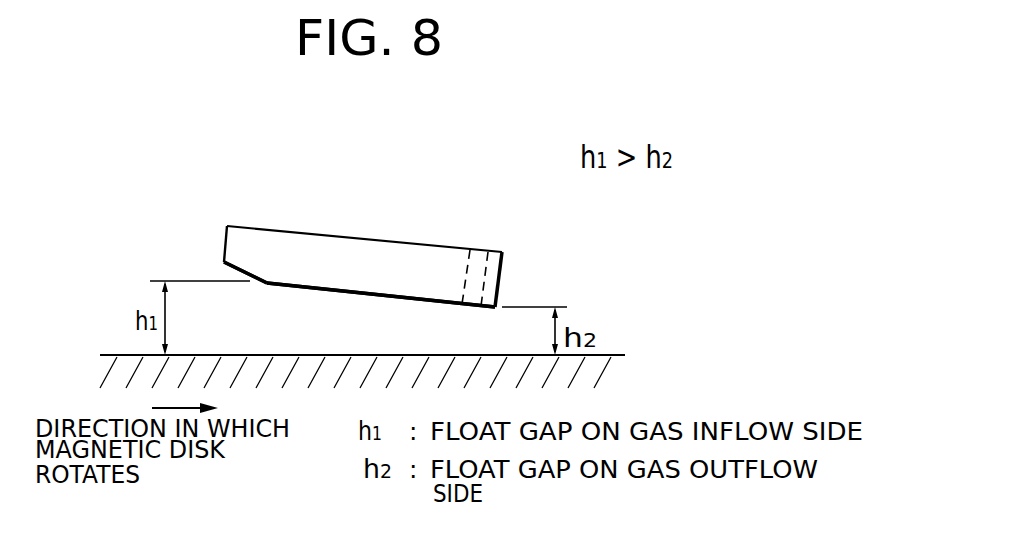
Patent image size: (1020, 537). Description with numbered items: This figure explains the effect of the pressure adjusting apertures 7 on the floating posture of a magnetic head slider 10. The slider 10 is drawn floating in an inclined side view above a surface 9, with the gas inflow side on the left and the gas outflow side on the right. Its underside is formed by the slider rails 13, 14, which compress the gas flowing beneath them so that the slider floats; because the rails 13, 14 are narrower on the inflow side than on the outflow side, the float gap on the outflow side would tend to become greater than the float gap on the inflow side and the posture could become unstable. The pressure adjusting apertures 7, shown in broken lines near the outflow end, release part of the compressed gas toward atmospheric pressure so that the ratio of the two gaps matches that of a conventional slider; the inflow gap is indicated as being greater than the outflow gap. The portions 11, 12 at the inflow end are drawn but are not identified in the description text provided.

The pressure adjusting apertures 7 is at (488, 252).
The magnetic disk 9 is at (243, 355).
The magnetic head slider 10 is at (342, 250).
The tapered leading edge surface 11 is at (225, 265).
The tapered leading edge surface 12 is at (225, 265).
The slider rail 13 is at (343, 295).
The slider rail 14 is at (343, 295).